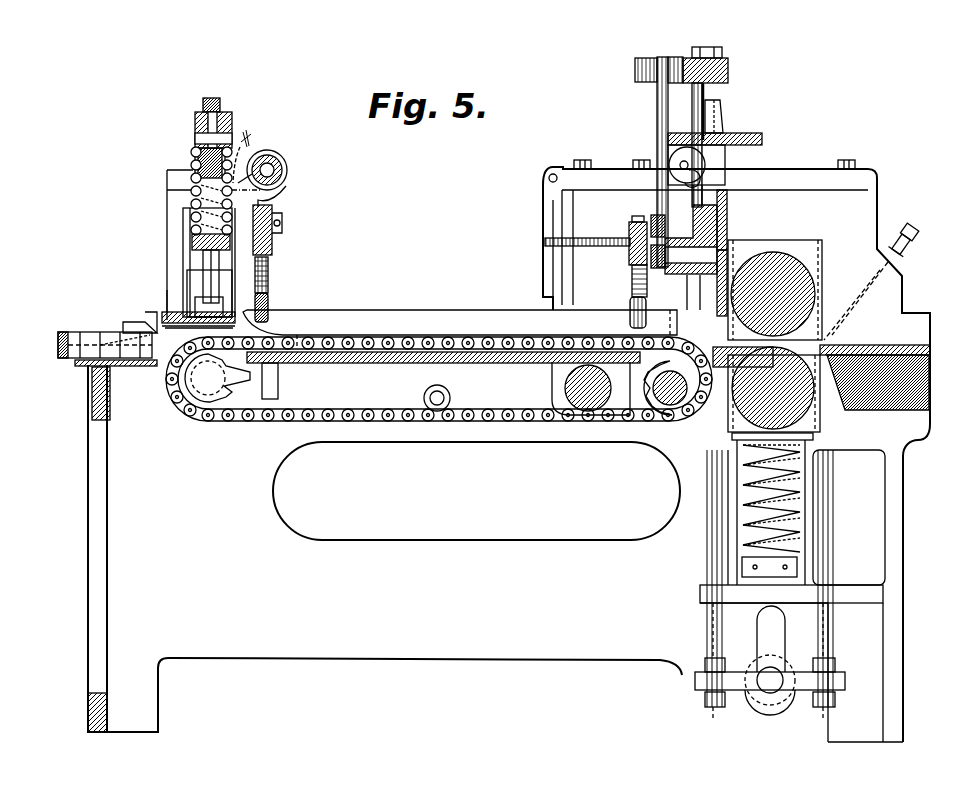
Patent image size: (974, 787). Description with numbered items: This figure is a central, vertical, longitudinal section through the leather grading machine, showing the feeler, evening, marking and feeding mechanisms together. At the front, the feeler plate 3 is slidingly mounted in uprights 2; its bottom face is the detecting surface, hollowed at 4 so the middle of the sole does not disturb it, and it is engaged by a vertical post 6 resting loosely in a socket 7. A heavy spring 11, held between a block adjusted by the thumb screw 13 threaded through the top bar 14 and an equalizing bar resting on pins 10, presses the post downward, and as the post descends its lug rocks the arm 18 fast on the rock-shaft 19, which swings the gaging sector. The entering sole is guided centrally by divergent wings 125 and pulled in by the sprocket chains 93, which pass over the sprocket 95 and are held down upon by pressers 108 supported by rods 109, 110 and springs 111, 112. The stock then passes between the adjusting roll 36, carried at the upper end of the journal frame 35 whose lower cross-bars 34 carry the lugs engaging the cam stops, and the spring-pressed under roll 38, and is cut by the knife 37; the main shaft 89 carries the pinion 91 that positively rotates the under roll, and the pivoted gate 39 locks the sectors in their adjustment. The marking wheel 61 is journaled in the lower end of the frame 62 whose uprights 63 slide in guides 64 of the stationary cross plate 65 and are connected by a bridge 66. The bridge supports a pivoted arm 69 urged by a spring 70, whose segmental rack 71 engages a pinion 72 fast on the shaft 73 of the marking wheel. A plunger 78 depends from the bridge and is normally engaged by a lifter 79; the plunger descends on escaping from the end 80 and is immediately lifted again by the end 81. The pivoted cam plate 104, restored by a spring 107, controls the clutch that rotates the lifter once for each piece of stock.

The uprights 2 is at (175, 240).
The plate 3 is at (166, 310).
The hollowed or cut away portion 4 is at (160, 320).
The vertical post 6 is at (200, 260).
The sockets 7 is at (226, 302).
The brackets or horizontal pins 10 is at (195, 247).
The heavy spring 11 is at (190, 199).
The thumb screw 13 is at (205, 120).
The top bar 14 is at (195, 131).
The arm or lever 18 is at (252, 133).
The rock-shaft 19 is at (288, 170).
The lower cross-bars 34 is at (800, 690).
The journal frame 35 is at (836, 508).
The adjusting roll or pressure device 36 is at (818, 270).
The knife 37 is at (878, 350).
The under roll 38 is at (812, 413).
The pivoted gate 39 is at (140, 328).
The marking wheel 61 is at (717, 312).
The frame 62 is at (716, 218).
The uprights 63 is at (724, 195).
The guides 64 is at (723, 122).
The stationary cross plate 65 is at (762, 138).
The bridge 66 is at (728, 70).
The pivoted arm 69 is at (657, 111).
The spring 70 is at (683, 62).
The segmental rack 71 is at (647, 222).
The pinion 72 is at (660, 268).
The shaft 73 is at (690, 272).
The plunger 78 is at (703, 112).
The lifter 79 is at (672, 159).
The end of lifter 80 is at (690, 165).
The end of lifter 81 is at (707, 172).
The main shaft 89 is at (564, 390).
The pinion 91 is at (190, 390).
The sprocket chains 93 is at (262, 418).
The sprocket 95 is at (668, 410).
The pivoted cam plate 104 is at (545, 302).
The spring 107 is at (585, 245).
The plates or pressers 108 is at (415, 318).
The rod 109 is at (271, 302).
The rod 110 is at (630, 305).
The spring 111 is at (273, 263).
The spring 112 is at (632, 283).
The divergent wings 125 is at (100, 335).